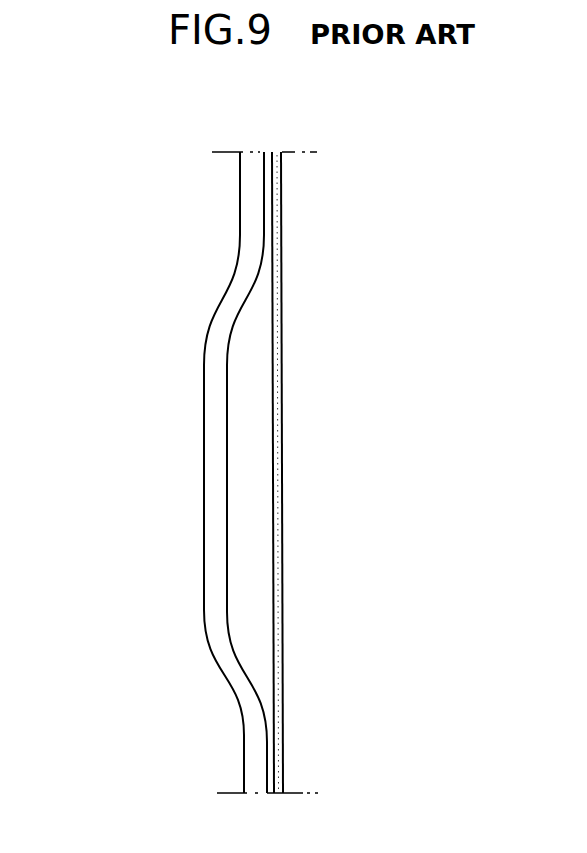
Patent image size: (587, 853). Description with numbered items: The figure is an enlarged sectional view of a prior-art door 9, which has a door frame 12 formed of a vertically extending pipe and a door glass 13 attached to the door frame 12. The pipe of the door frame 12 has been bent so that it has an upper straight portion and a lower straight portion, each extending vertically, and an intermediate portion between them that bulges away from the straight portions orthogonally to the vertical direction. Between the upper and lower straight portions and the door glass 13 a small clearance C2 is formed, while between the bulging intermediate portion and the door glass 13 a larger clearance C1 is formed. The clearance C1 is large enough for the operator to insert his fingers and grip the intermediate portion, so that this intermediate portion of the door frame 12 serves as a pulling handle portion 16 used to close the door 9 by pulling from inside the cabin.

The door 9 is at (256, 459).
The door frame 12 is at (240, 172).
The door glass 13 is at (282, 333).
The pulling handle portion 16 is at (228, 225).
The clearance C1 is at (178, 478).
The clearance C2 is at (215, 190).